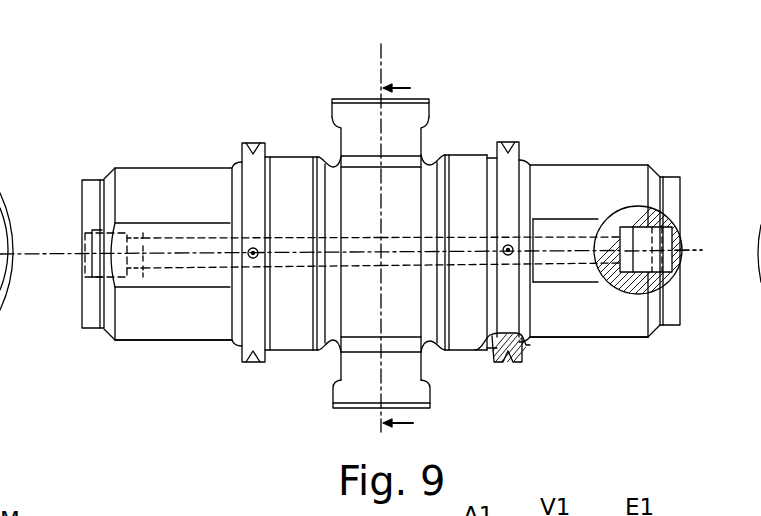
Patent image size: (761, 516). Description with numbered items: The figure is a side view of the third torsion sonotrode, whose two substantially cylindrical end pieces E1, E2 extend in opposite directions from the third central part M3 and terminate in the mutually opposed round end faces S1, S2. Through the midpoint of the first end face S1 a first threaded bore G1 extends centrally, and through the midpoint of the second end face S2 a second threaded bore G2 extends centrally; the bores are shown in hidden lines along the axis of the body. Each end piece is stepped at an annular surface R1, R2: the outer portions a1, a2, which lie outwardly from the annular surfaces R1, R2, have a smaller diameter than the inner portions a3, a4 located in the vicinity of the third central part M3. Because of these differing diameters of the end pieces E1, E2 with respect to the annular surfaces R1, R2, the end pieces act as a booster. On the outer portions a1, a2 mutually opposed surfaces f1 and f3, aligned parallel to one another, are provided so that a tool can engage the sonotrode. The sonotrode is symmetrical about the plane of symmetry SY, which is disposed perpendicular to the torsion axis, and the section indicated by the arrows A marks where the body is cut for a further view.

The second end face S2 is at (83, 195).
The second end portion E2 is at (147, 168).
The annular surface R2 is at (256, 140).
The inner portion a4 is at (281, 177).
The plane of symmetry SY is at (381, 228).
The section plane A- A is at (398, 254).
The inner portion a3 is at (453, 162).
The annular surface R1 is at (512, 141).
The first end portion E1 is at (582, 177).
The surface f1 is at (591, 226).
The first end face S1 is at (680, 185).
The first threaded bore G1 is at (680, 262).
The second threaded bore G2 is at (85, 268).
The surface f3 is at (143, 273).
The outer portion a2 is at (198, 328).
The outer portion a1 is at (598, 319).
The third central part M3 is at (324, 428).